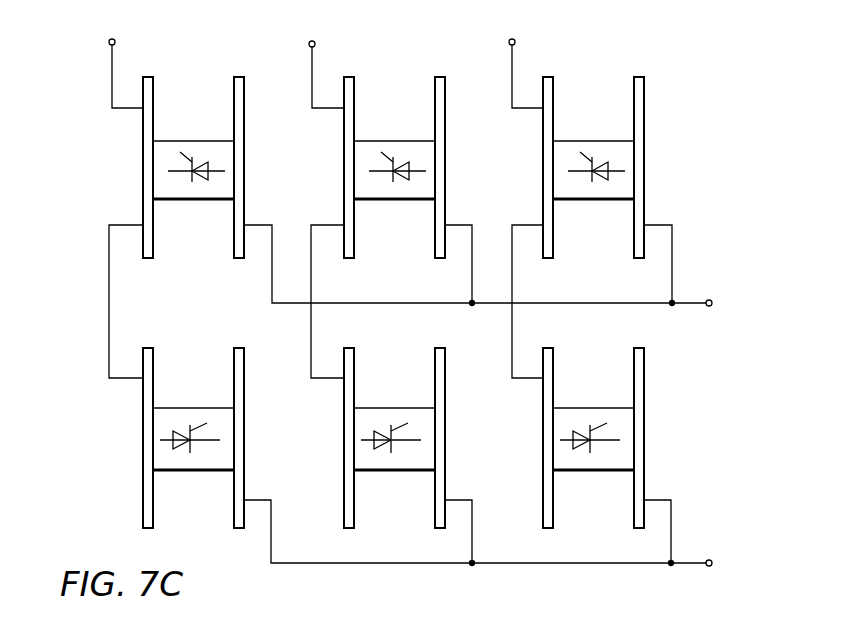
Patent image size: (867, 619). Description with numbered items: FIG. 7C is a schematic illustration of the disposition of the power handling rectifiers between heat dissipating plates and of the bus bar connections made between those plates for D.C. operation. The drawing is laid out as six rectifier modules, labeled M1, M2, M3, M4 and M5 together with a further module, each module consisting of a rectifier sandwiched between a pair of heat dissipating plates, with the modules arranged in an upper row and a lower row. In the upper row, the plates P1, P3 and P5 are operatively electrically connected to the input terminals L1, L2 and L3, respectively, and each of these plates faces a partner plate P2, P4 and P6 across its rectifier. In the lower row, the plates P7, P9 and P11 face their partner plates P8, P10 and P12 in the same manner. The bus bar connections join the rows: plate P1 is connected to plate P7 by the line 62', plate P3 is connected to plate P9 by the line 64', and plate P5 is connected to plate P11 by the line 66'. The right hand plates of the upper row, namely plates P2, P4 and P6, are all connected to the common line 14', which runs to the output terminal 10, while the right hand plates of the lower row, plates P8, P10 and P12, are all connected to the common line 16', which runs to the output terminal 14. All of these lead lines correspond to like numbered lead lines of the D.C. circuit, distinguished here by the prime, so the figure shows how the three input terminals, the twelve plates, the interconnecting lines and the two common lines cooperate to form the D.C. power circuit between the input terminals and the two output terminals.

The converter circuit M1 is at (70, 498).
The SCR module M2 is at (175, 162).
The SCR module M3 is at (419, 433).
The SCR module M4 is at (421, 162).
The SCR module M5 is at (620, 433).
The input terminal L1 is at (123, 61).
The input terminal L2 is at (324, 61).
The input terminal L3 is at (523, 61).
The plate P1 is at (155, 92).
The plate P2 is at (246, 92).
The plate P3 is at (356, 92).
The plate P4 is at (447, 92).
The plate P5 is at (555, 92).
The plate P6 is at (646, 92).
The plate P7 is at (155, 363).
The plate P8 is at (246, 363).
The plate P9 is at (356, 363).
The plate P10 is at (447, 363).
The plate P11 is at (555, 363).
The plate P12 is at (646, 363).
The line 62' is at (94, 301).
The line 64' is at (339, 301).
The line 66' is at (534, 301).
The common line 14' is at (483, 265).
The common line 16' is at (484, 533).
The output terminal 10 is at (724, 305).
The output terminal 14 is at (723, 565).